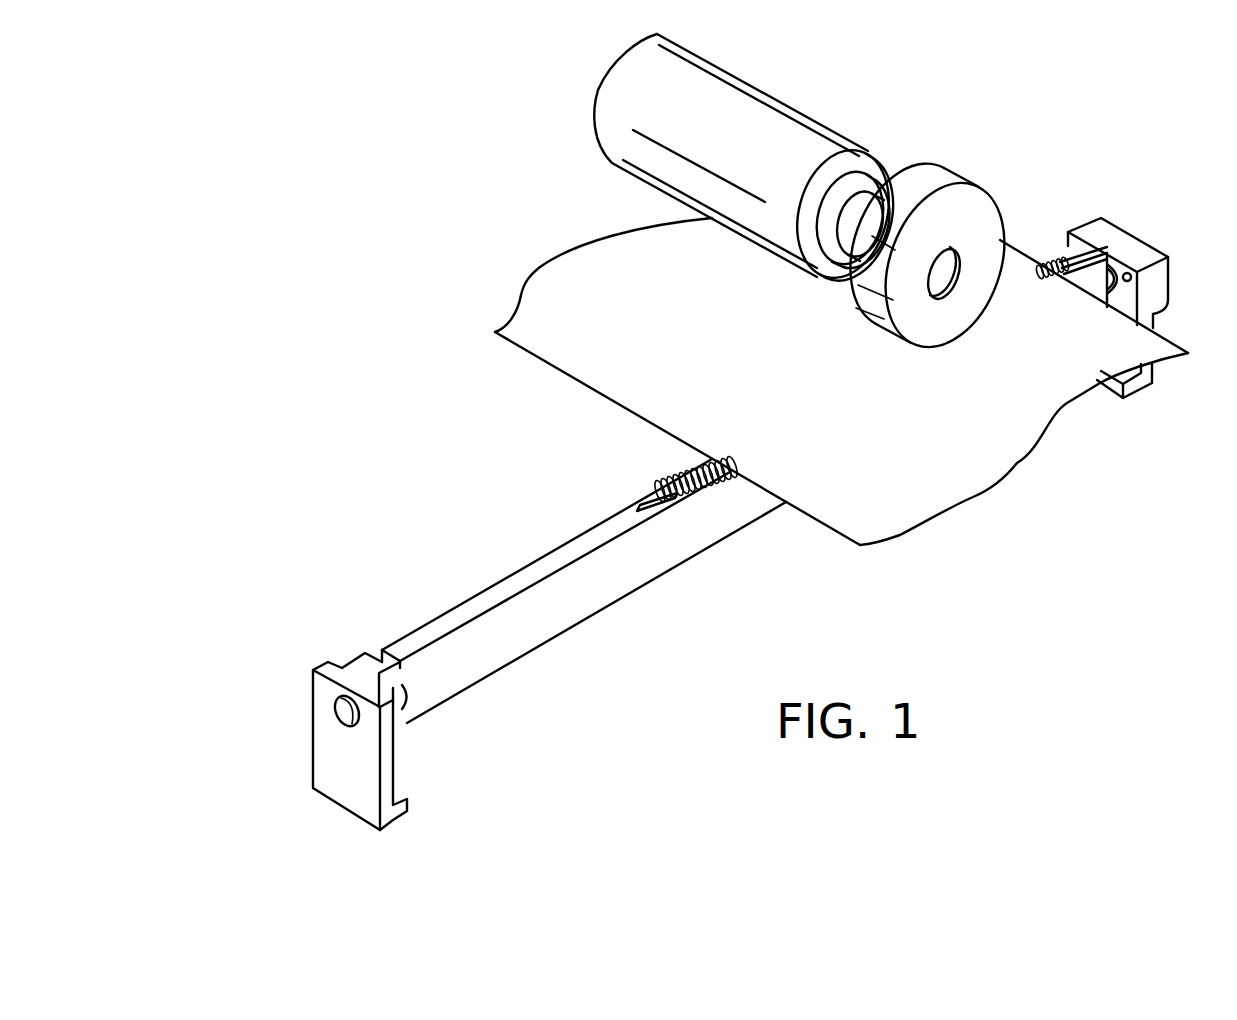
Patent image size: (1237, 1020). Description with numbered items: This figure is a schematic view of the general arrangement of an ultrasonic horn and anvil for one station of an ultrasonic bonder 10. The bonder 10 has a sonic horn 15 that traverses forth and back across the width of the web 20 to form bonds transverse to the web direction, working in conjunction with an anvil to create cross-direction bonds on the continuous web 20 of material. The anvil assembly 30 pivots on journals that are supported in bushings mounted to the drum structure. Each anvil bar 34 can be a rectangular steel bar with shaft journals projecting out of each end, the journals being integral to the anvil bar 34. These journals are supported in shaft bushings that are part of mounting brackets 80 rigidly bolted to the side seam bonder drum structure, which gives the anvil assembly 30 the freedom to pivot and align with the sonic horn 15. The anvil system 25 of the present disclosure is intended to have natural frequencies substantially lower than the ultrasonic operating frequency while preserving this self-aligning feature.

The ultrasonic bonder 10 is at (412, 195).
The sonic horn 15 is at (923, 197).
The web 20 is at (1113, 357).
The anvil system 25 is at (264, 532).
The anvil assembly 30 is at (584, 589).
The anvil bar 34 is at (517, 580).
The mounting brackets 80 is at (1138, 237).